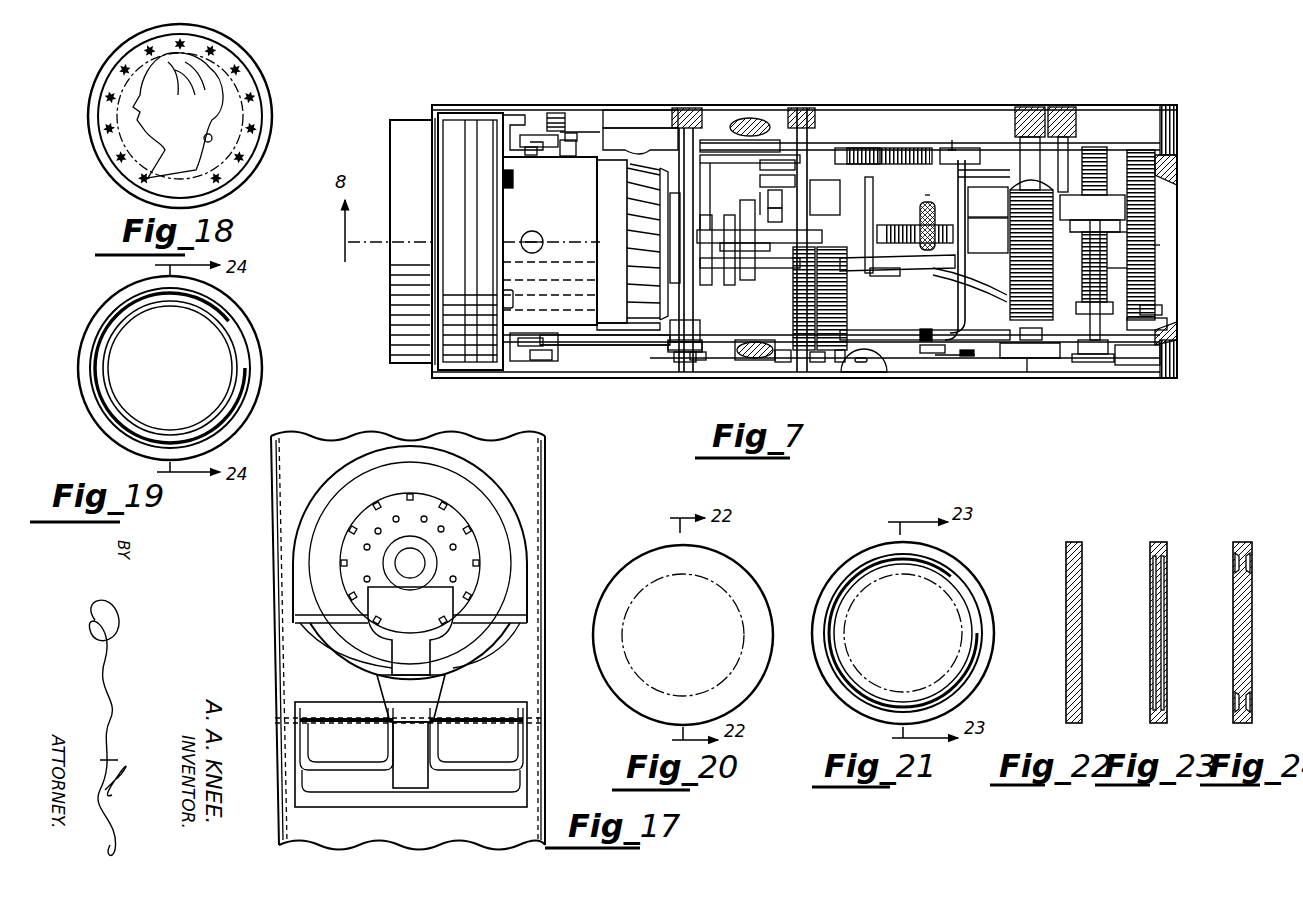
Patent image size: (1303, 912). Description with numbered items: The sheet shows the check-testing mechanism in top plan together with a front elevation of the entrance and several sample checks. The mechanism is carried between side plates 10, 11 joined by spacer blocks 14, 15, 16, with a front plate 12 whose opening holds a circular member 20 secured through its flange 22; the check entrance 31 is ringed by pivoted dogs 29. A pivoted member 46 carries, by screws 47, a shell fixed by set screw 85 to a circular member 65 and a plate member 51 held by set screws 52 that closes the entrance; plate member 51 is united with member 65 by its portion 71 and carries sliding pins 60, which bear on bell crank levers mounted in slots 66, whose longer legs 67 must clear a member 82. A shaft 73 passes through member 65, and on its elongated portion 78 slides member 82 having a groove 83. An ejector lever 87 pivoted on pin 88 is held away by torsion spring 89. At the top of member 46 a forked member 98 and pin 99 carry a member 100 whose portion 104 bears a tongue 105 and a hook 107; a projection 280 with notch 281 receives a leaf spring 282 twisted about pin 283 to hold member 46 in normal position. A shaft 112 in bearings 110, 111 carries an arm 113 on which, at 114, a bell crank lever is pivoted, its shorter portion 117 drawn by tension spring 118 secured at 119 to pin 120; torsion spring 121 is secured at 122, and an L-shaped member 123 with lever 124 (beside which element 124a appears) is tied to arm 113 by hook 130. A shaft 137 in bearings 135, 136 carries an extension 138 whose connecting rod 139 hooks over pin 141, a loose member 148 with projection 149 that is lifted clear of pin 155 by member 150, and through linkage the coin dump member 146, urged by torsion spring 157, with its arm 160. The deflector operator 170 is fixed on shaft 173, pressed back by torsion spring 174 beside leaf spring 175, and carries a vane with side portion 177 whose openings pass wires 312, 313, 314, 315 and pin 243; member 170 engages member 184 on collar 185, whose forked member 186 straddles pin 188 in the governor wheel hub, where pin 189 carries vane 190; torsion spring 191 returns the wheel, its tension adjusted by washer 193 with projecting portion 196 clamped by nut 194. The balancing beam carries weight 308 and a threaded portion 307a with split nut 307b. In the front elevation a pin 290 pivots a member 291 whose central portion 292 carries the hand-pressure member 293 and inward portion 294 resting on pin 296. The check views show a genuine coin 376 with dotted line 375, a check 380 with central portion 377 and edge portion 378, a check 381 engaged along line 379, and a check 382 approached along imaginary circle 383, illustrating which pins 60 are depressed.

In FIG. 7, the side plate 10 is at (440, 380).
In FIG. 17, the side plate 10 is at (540, 505).
In FIG. 7, the side plate 11 is at (463, 112).
In FIG. 17, the side plate 11 is at (277, 520).
In FIG. 7, the front plate 12 is at (436, 210).
In FIG. 17, the front plate 12 is at (295, 635).
In FIG. 7, the spacer block 14 is at (753, 118).
In FIG. 7, the spacer block 15 is at (1178, 121).
In FIG. 7, the spacer block 16 is at (1179, 170).
In FIG. 7, the circular member 20 is at (397, 122).
In FIG. 17, the circular member 20 is at (470, 476).
In FIG. 7, the flange 22 is at (445, 148).
In FIG. 17, the dog member 29 is at (475, 558).
In FIG. 17, the check entrance 31 is at (362, 510).
In FIG. 7, the closure member 46 is at (493, 221).
In FIG. 7, the screws 47 is at (503, 178).
In FIG. 7, the plate member 51 is at (465, 164).
In FIG. 7, the set screws 52 is at (477, 180).
In FIG. 17, the pins 60 is at (445, 535).
In FIG. 7, the circular member 65 is at (602, 182).
In FIG. 7, the longitudinal slots 66 is at (610, 205).
In FIG. 7, the longer leg of bell crank lever 67 is at (637, 196).
In FIG. 17, the projecting portion 71 is at (414, 527).
In FIG. 7, the shaft 73 is at (776, 199).
In FIG. 17, the shaft 73 is at (395, 563).
In FIG. 7, the elongated circular portion 78 is at (756, 279).
In FIG. 7, the sliding member 82 is at (676, 290).
In FIG. 7, the circumferential groove 83 is at (736, 290).
In FIG. 7, the set screw 85 is at (535, 227).
In FIG. 7, the ejector lever 87 is at (714, 232).
In FIG. 7, the pin 88 is at (790, 370).
In FIG. 7, the torsion spring 89 is at (796, 306).
In FIG. 7, the forked member 98 is at (526, 352).
In FIG. 7, the pin 99 is at (546, 364).
In FIG. 7, the pivoted member 100 is at (586, 342).
In FIG. 7, the irregularly shaped portion 104 is at (623, 342).
In FIG. 7, the tongue 105 is at (975, 322).
In FIG. 7, the hook 107 is at (1027, 331).
In FIG. 7, the bearing 110 is at (1012, 362).
In FIG. 7, the bearing 111 is at (1031, 108).
In FIG. 7, the shaft 112 is at (1031, 362).
In FIG. 7, the arm 113 is at (819, 181).
In FIG. 7, the pivot 114 is at (772, 189).
In FIG. 7, the shorter portion of bell crank lever 117 is at (772, 168).
In FIG. 7, the tension spring 118 is at (886, 150).
In FIG. 7, the spring attachment 119 is at (837, 149).
In FIG. 7, the pin 120 is at (937, 150).
In FIG. 7, the torsion spring 121 is at (1013, 228).
In FIG. 7, the spring attachment 122 is at (988, 202).
In FIG. 7, the L-shaped member 123 is at (958, 285).
In FIG. 7, the lever 124 is at (951, 360).
In FIG. 7, the pipe loop 124a is at (988, 335).
In FIG. 7, the hook 130 is at (930, 208).
In FIG. 7, the bearing 135 is at (678, 372).
In FIG. 7, the bearing 136 is at (702, 108).
In FIG. 7, the shaft 137 is at (701, 195).
In FIG. 7, the extension 138 is at (680, 352).
In FIG. 7, the connecting rod 139 is at (712, 362).
In FIG. 7, the pin 141 is at (987, 362).
In FIG. 7, the coin dump member 146 is at (1120, 370).
In FIG. 7, the loose member 148 is at (612, 120).
In FIG. 7, the projection 149 is at (656, 128).
In FIG. 7, the hooked member 150 is at (731, 136).
In FIG. 7, the pin 155 is at (573, 136).
In FIG. 7, the torsion spring 157 is at (1156, 248).
In FIG. 7, the arm 160 is at (1162, 311).
In FIG. 7, the deflector operator 170 is at (1156, 206).
In FIG. 7, the shaft 173 is at (1088, 366).
In FIG. 7, the torsion spring 174 is at (1102, 230).
In FIG. 7, the leaf spring 175 is at (1093, 246).
In FIG. 7, the side portion of vane 177 is at (1057, 110).
In FIG. 7, the member 184 is at (1150, 233).
In FIG. 7, the collar 185 is at (1152, 269).
In FIG. 7, the forked member 186 is at (869, 271).
In FIG. 7, the pin 188 is at (872, 204).
In FIG. 7, the pin 189 is at (773, 220).
In FIG. 7, the vane 190 is at (766, 200).
In FIG. 7, the torsion spring 191 is at (836, 301).
In FIG. 7, the washer 193 is at (848, 368).
In FIG. 7, the nut 194 is at (826, 370).
In FIG. 7, the inwardly projecting portion 196 is at (870, 366).
In FIG. 7, the pin 243 is at (1061, 226).
In FIG. 7, the projection 280 is at (510, 116).
In FIG. 7, the notch 281 is at (550, 113).
In FIG. 7, the leaf spring 282 is at (537, 150).
In FIG. 7, the pin 283 is at (568, 158).
In FIG. 17, the pin 290 is at (365, 722).
In FIG. 17, the pressure member 291 is at (407, 792).
In FIG. 17, the central portion 292 is at (432, 750).
In FIG. 17, the hand-pressure member 293 is at (445, 686).
In FIG. 17, the inward projection 294 is at (405, 617).
In FIG. 17, the transverse pin 296 is at (503, 636).
In FIG. 7, the threaded portion 307a is at (906, 225).
In FIG. 7, the split nut 307b is at (910, 276).
In FIG. 7, the weight portion 308 is at (939, 218).
In FIG. 7, the wire 312 is at (640, 168).
In FIG. 7, the wire 313 is at (727, 163).
In FIG. 7, the wire 314 is at (790, 270).
In FIG. 7, the wire 315 is at (656, 316).
In FIG. 18, the dotted line 375 is at (243, 102).
In FIG. 18, the genuine check 376 is at (270, 125).
In FIG. 19, the central portion 377 is at (170, 368).
In FIG. 24, the central portion 377 is at (1233, 598).
In FIG. 19, the edge portion 378 is at (222, 334).
In FIG. 20, the line 379 is at (709, 580).
In FIG. 19, the check 380 is at (243, 325).
In FIG. 24, the check 380 is at (1240, 540).
In FIG. 20, the check 381 is at (756, 582).
In FIG. 22, the check 381 is at (1072, 540).
In FIG. 21, the check 382 is at (960, 558).
In FIG. 23, the check 382 is at (1158, 540).
In FIG. 21, the imaginary circle 383 is at (960, 610).